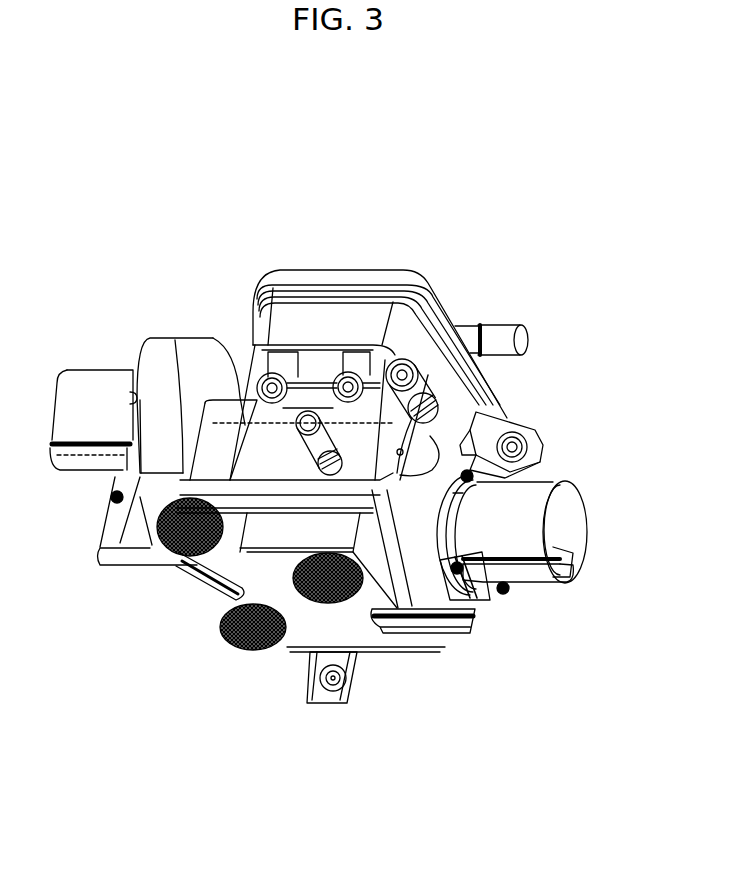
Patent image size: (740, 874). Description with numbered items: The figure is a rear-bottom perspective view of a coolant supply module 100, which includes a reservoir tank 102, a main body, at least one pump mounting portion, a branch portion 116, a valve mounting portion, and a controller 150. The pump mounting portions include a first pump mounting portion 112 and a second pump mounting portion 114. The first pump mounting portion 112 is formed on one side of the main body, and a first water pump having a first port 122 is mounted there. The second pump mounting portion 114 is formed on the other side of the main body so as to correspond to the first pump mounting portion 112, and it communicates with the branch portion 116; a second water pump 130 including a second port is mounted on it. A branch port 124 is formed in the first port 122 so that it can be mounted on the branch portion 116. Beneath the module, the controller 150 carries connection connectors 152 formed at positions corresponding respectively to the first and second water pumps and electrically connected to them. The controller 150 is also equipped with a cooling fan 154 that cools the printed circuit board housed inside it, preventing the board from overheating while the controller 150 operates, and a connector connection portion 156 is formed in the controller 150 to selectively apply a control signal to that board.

The coolant supply module 100 is at (442, 196).
The reservoir tank 102 is at (320, 318).
The first pump mounting portion 112 is at (527, 508).
The second pump mounting portion 114 is at (180, 345).
The branch portion 116 is at (226, 398).
The first port 122 is at (490, 400).
The branch port 124 is at (505, 417).
The second water pump 130 is at (92, 392).
The controller 150 is at (382, 655).
The connection connectors 152 is at (123, 567).
The cooling fan 154 is at (318, 604).
The connector connection portion 156 is at (200, 587).